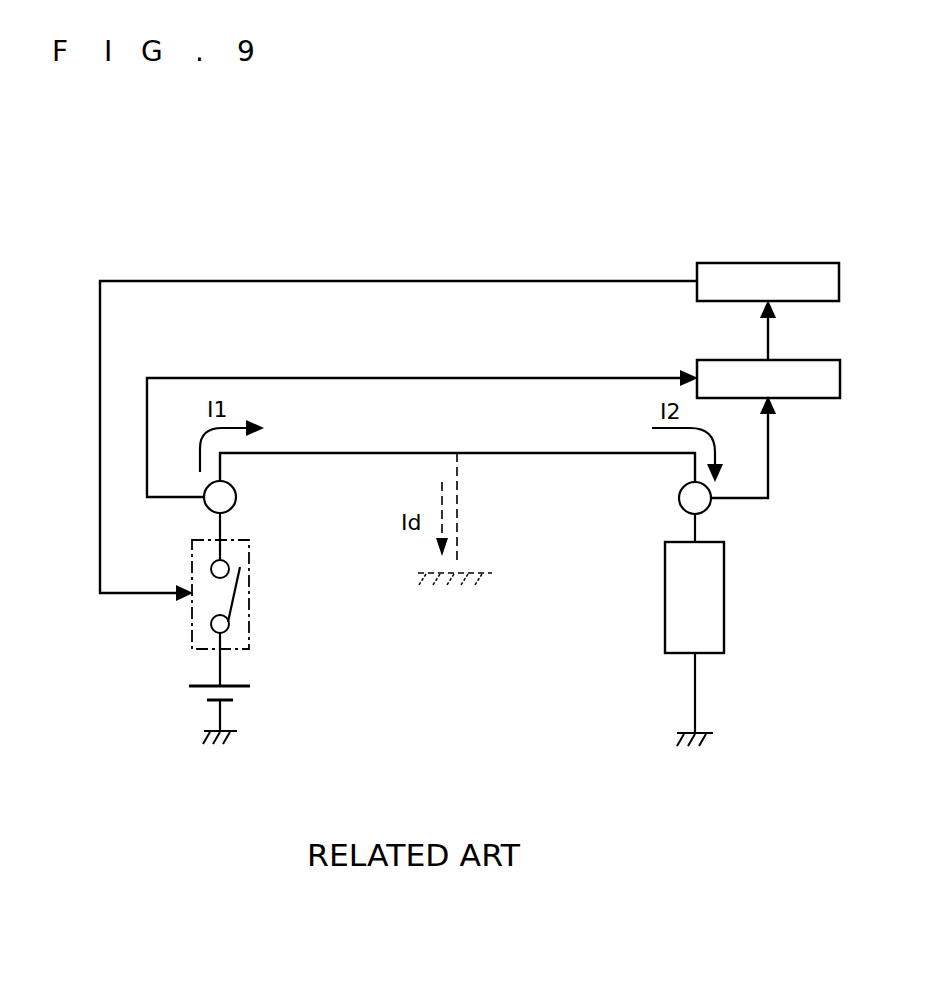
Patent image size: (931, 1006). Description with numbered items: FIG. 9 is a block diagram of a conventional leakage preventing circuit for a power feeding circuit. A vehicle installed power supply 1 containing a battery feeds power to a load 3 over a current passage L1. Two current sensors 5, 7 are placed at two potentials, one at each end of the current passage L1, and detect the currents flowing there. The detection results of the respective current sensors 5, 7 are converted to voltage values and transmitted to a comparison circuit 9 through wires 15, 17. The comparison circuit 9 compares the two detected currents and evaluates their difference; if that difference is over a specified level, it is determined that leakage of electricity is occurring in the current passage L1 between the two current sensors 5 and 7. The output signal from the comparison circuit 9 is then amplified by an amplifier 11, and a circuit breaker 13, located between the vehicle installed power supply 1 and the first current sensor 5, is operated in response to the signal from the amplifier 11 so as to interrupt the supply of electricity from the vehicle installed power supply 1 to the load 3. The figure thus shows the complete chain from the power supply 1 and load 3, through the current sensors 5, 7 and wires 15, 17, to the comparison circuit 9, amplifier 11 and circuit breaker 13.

The vehicle installed power supply 1 is at (236, 690).
The load 3 is at (665, 596).
The current sensor 5 is at (237, 497).
The current sensor 7 is at (678, 497).
The comparison circuit 9 is at (748, 359).
The amplifier 11 is at (747, 263).
The circuit breaker 13 is at (250, 593).
The wire 15 is at (440, 378).
The wire 17 is at (770, 460).
The current passage L1 is at (521, 456).